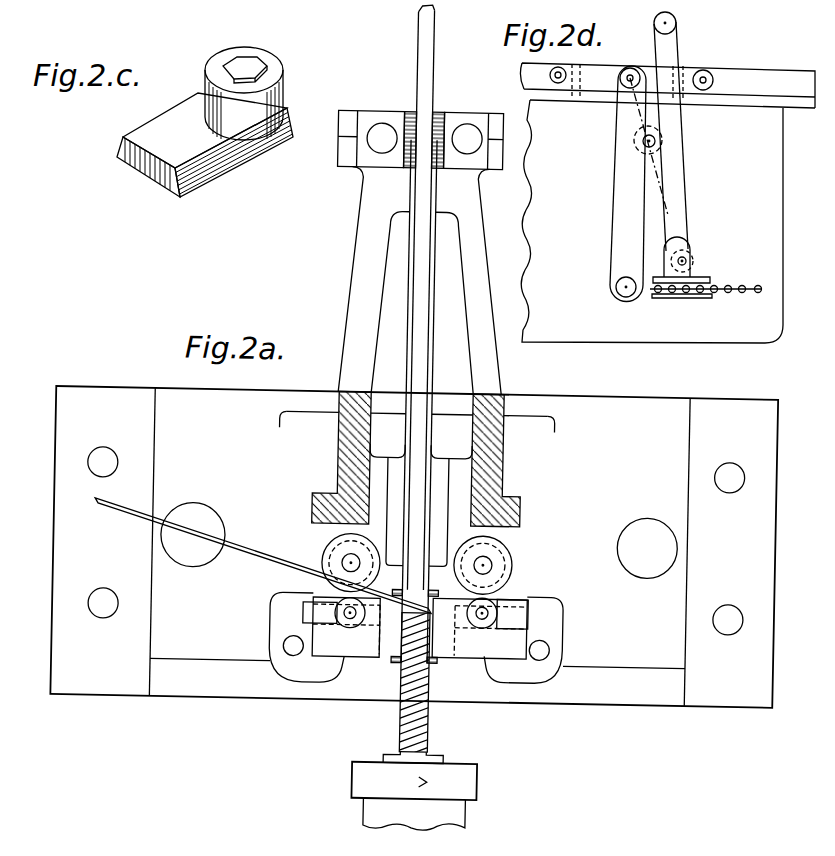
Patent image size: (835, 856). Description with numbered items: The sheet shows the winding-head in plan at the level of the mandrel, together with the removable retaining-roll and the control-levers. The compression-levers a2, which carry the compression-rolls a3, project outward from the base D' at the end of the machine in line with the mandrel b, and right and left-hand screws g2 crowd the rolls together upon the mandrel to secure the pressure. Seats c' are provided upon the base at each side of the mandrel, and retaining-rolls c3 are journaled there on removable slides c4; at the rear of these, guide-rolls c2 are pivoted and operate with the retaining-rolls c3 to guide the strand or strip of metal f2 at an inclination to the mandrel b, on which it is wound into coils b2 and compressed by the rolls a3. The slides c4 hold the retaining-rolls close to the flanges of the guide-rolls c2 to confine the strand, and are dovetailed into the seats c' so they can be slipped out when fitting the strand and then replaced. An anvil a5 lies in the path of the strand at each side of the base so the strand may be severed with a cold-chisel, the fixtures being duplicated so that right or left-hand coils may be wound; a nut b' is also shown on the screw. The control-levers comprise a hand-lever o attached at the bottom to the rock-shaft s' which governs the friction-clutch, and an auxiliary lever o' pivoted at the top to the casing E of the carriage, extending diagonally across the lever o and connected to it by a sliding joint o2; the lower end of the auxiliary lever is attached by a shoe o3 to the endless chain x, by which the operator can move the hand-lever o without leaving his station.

In FIG. 2A, the mandrel b is at (436, 298).
In FIG. 2A, the right and left-hand screws g2 is at (460, 128).
In FIG. 2A, the compression-lever a2 is at (408, 295).
In FIG. 2A, the compression-rolls a3 is at (395, 664).
In FIG. 2A, the anvil a5 is at (207, 521).
In FIG. 2A, the strand or strip of metal f2 is at (463, 733).
In FIG. 2A, the guide-rolls c2 is at (528, 551).
In FIG. 2A, the retaining-rolls c3 is at (488, 622).
In FIG. 2C, the retaining-rolls c3 is at (273, 55).
In FIG. 2A, the removable slides c4 is at (566, 590).
In FIG. 2C, the removable slides c4 is at (205, 145).
In FIG. 2A, the seats c' is at (405, 650).
In FIG. 2A, the coils b2 is at (410, 732).
In FIG. 2A, the nut b' is at (391, 790).
In FIG. 2A, the base D' is at (414, 547).
In FIG. 2D, the hand-lever o is at (682, 131).
In FIG. 2D, the auxiliary lever o' is at (662, 184).
In FIG. 2D, the sliding joint o2 is at (660, 141).
In FIG. 2D, the shoe o3 is at (693, 265).
In FIG. 2D, the rock-shaft s' is at (606, 287).
In FIG. 2D, the endless chain x is at (745, 293).
In FIG. 2D, the casing E is at (658, 337).